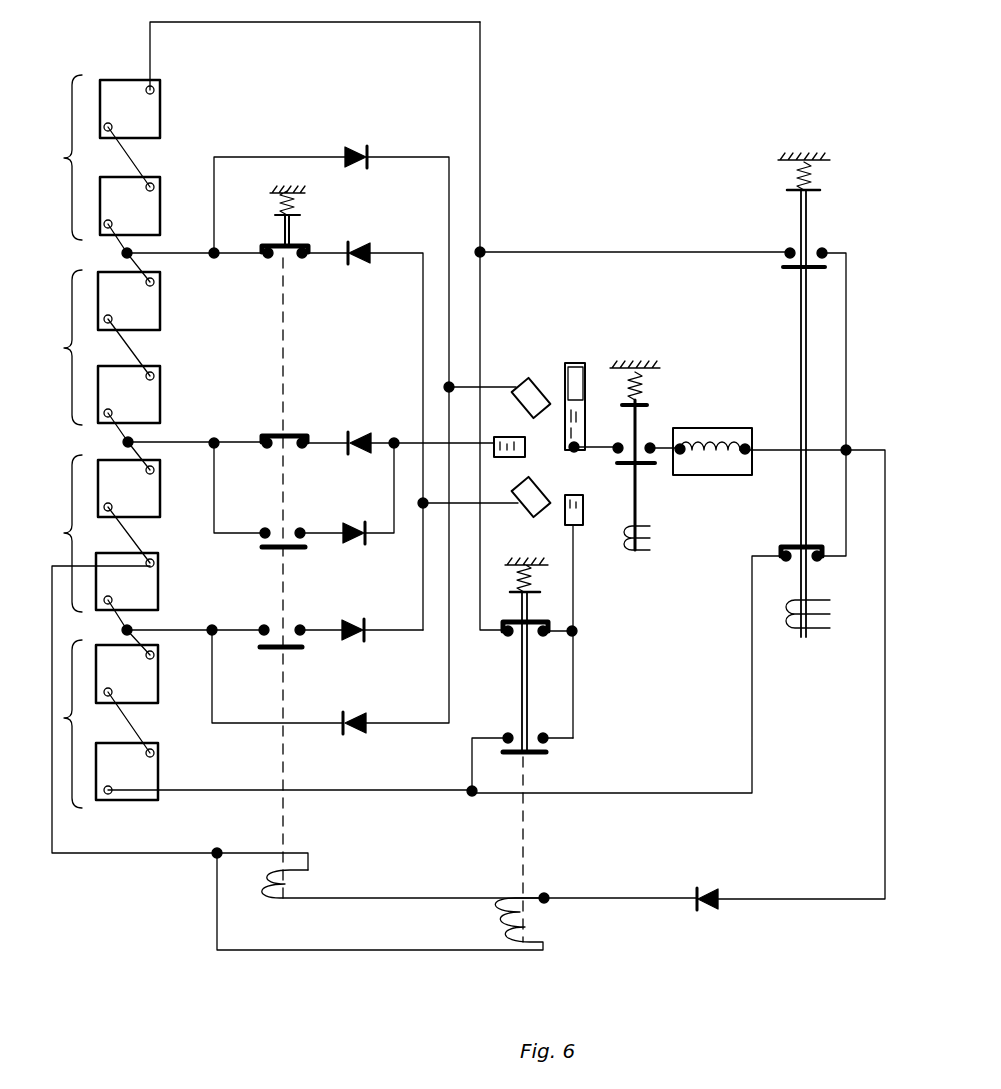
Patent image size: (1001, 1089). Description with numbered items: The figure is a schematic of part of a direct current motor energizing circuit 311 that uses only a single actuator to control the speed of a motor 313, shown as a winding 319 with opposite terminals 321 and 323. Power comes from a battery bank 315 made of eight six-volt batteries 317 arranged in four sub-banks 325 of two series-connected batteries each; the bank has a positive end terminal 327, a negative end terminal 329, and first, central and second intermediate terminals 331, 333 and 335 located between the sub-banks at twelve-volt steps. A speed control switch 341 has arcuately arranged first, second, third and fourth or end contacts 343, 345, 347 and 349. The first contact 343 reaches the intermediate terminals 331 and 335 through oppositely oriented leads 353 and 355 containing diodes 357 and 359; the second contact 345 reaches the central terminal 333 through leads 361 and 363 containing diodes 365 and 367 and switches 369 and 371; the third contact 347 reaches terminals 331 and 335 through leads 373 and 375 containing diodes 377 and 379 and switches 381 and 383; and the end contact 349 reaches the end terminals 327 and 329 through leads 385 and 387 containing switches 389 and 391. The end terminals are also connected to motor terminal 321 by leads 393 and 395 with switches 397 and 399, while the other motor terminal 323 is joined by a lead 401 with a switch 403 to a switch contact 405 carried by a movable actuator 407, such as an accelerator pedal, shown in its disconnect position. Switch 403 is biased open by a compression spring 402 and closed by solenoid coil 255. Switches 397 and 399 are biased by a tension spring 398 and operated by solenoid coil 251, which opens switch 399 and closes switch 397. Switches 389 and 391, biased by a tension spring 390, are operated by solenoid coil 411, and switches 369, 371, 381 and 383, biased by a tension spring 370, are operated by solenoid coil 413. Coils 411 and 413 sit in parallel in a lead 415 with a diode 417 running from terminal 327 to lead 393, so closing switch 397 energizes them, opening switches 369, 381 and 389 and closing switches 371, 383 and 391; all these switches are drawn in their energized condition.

The solenoid coil 251 is at (826, 630).
The solenoid coil 255 is at (663, 552).
The direct current motor energizing circuit 311 is at (676, 657).
The motor 313 is at (745, 430).
The battery bank 315 is at (58, 290).
The battery 317 is at (118, 80).
The winding 319 is at (700, 440).
The motor terminal 321 is at (745, 460).
The motor terminal 323 is at (688, 460).
The sub-bank 325 is at (66, 717).
The positive end terminal 327 is at (105, 800).
The negative end terminal 329 is at (160, 88).
The first intermediate terminal 331 is at (135, 628).
The central intermediate terminal 333 is at (135, 440).
The second intermediate terminal 335 is at (132, 256).
The speed control switch 341 is at (598, 477).
The first contact 343 is at (548, 370).
The second contact 345 is at (507, 460).
The third contact 347 is at (486, 507).
The fourth or end contact 349 is at (565, 522).
The lead 353 is at (449, 675).
The lead 355 is at (428, 157).
The diode 357 is at (356, 735).
The diode 359 is at (348, 147).
The lead 361 is at (394, 488).
The lead 363 is at (380, 450).
The diode 365 is at (345, 545).
The diode 367 is at (365, 433).
The switch 369 is at (270, 548).
The tension spring 370 is at (285, 205).
The switch 371 is at (280, 447).
The lead 373 is at (423, 580).
The lead 375 is at (423, 315).
The diode 377 is at (348, 640).
The diode 379 is at (368, 248).
The switch 381 is at (270, 650).
The switch 383 is at (290, 260).
The lead 385 is at (472, 763).
The lead 387 is at (482, 289).
The switch 389 is at (535, 752).
The tension spring 390 is at (535, 578).
The switch 391 is at (508, 640).
The lead 393 is at (752, 733).
The lead 395 is at (849, 355).
The switch 397 is at (790, 547).
The tension spring 398 is at (800, 178).
The switch 399 is at (775, 275).
The lead 401 is at (650, 445).
The compression spring 402 is at (640, 400).
The switch 403 is at (630, 470).
The switch contact 405 is at (606, 356).
The movable actuator 407 is at (565, 425).
The solenoid coil 411 is at (498, 918).
The solenoid coil 413 is at (262, 898).
The lead 415 is at (148, 856).
The diode 417 is at (712, 912).